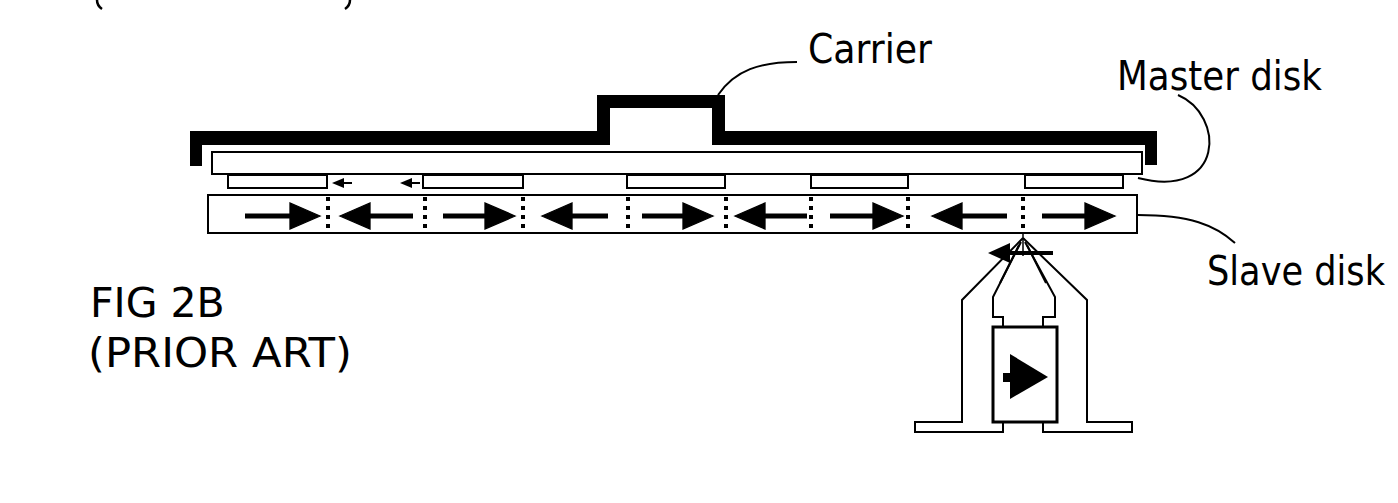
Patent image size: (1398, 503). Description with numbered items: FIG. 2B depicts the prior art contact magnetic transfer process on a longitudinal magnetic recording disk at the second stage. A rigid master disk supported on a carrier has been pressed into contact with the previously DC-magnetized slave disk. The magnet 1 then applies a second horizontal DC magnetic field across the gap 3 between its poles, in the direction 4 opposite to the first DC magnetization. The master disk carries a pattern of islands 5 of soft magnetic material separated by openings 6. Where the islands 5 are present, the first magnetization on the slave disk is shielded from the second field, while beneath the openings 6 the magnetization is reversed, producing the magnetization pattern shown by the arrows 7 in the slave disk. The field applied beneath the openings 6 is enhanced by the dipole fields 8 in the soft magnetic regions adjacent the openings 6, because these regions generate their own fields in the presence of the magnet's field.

The magnet 1 is at (1073, 372).
The gap 3 is at (1025, 268).
The direction 4 is at (1047, 249).
The islands 5 is at (527, 184).
The openings 6 is at (375, 183).
The arrows 7 is at (370, 218).
The dipole fields 8 is at (347, 182).